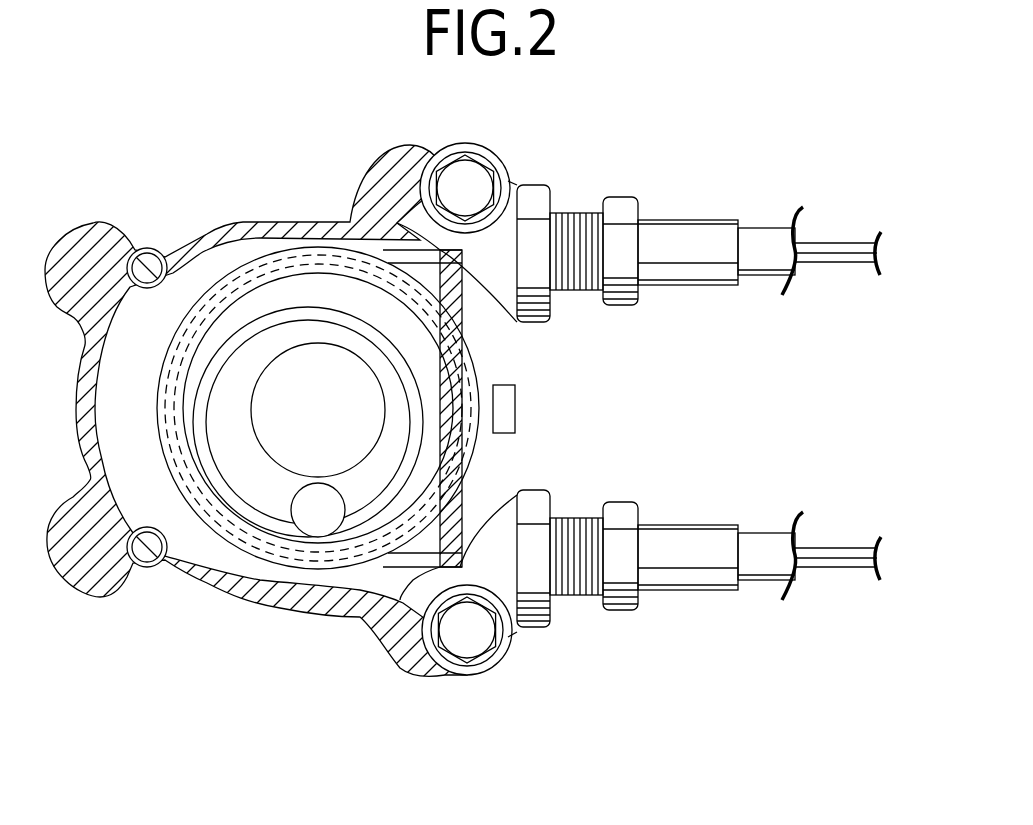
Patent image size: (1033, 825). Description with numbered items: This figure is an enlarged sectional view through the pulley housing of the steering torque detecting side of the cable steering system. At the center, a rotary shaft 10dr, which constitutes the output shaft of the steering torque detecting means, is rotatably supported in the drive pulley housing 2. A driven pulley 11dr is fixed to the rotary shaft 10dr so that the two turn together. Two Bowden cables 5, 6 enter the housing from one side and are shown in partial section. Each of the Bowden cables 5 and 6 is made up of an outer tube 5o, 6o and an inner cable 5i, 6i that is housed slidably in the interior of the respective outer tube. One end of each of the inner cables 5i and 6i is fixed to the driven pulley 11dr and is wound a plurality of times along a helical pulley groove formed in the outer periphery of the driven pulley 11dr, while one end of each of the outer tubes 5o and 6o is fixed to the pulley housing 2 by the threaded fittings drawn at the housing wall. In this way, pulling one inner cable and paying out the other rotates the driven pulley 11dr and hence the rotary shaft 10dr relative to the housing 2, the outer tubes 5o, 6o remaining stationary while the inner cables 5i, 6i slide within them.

The drive pulley housing 2 is at (304, 228).
The Bowden cable 5 is at (860, 670).
The outer tube 5o is at (763, 557).
The inner cable 5i is at (842, 555).
The Bowden cable 6 is at (857, 132).
The outer tube 6o is at (780, 235).
The inner cable 6i is at (850, 248).
The rotary shaft 10dr is at (283, 436).
The driven pulley 11dr is at (440, 365).